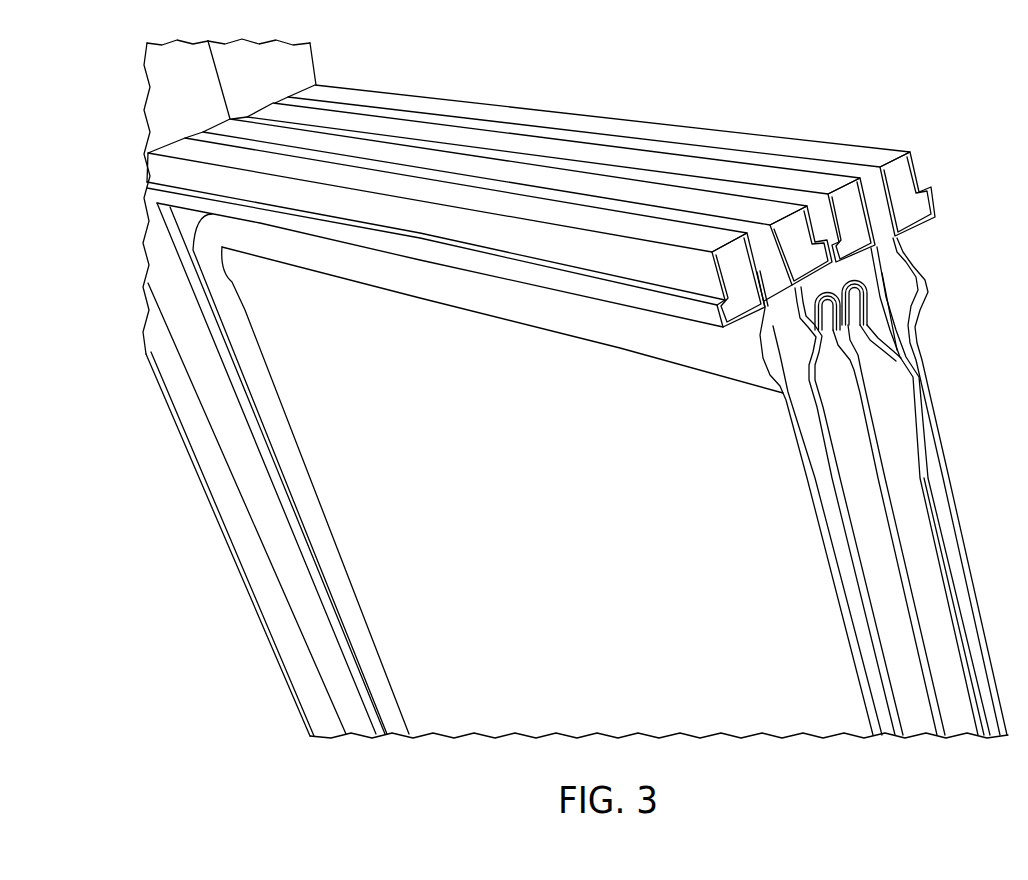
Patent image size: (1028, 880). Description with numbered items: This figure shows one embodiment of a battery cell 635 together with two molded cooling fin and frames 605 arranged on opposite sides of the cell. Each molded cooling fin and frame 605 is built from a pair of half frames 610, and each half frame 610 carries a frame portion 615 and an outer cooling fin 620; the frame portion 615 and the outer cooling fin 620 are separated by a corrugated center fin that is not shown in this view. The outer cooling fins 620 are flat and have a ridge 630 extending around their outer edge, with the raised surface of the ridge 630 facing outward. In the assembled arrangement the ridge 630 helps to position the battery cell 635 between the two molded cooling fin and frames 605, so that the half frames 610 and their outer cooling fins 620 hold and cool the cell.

The molded cooling fin and frame 605 is at (607, 217).
The half frame 610 is at (700, 198).
The frame portion 615 is at (918, 168).
The outer cooling fin 620 is at (947, 437).
The ridge 630 is at (925, 282).
The battery cell 635 is at (870, 390).